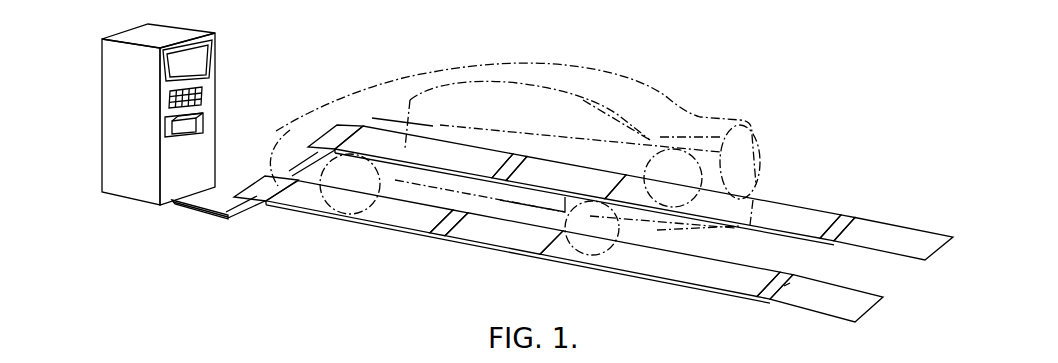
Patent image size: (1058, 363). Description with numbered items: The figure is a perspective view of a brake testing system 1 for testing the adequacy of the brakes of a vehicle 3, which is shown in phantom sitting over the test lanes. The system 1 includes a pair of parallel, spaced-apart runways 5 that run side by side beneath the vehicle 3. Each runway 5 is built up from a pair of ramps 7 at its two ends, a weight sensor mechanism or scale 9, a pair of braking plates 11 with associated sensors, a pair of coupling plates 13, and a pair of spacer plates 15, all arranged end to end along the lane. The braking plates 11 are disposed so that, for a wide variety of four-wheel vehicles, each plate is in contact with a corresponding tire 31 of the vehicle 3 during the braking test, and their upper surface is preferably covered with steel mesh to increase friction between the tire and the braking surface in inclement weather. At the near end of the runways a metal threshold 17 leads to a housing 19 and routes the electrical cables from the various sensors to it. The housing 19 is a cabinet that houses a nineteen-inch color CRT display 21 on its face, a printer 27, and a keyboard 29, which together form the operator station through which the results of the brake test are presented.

The system 1 is at (322, 41).
The vehicle 3 is at (667, 97).
The runway 5 is at (712, 250).
The ramp 7 is at (250, 186).
The weight sensor mechanism or scale 9 is at (790, 283).
The braking plate 11 is at (460, 170).
The coupling plate 13 is at (526, 159).
The spacer plate 15 is at (565, 186).
The metal threshold 17 is at (243, 219).
The housing 19 is at (205, 110).
The color CRT display 21 is at (187, 60).
The printer 27 is at (185, 134).
The keyboard 29 is at (202, 91).
The tire 31 is at (455, 117).